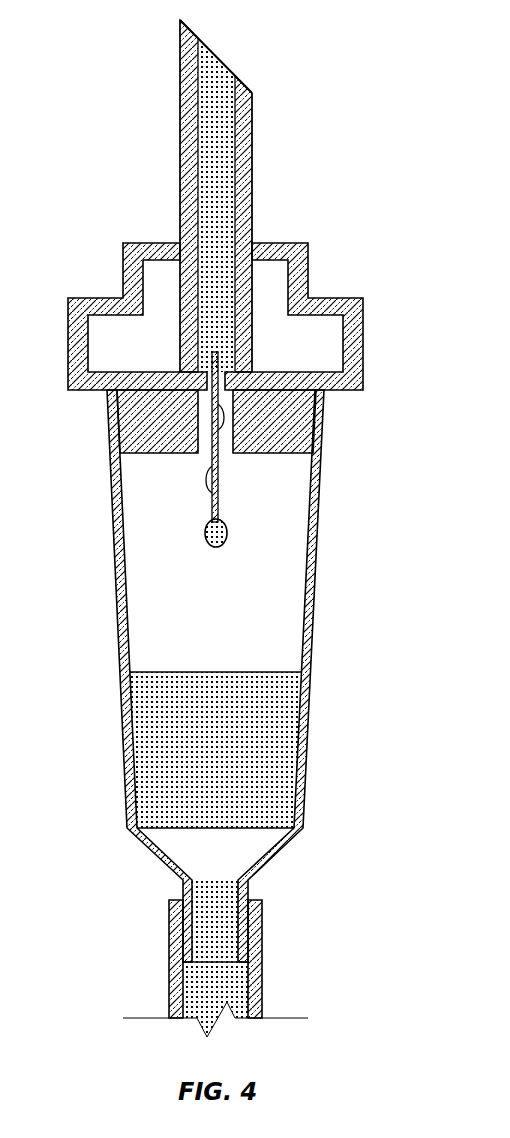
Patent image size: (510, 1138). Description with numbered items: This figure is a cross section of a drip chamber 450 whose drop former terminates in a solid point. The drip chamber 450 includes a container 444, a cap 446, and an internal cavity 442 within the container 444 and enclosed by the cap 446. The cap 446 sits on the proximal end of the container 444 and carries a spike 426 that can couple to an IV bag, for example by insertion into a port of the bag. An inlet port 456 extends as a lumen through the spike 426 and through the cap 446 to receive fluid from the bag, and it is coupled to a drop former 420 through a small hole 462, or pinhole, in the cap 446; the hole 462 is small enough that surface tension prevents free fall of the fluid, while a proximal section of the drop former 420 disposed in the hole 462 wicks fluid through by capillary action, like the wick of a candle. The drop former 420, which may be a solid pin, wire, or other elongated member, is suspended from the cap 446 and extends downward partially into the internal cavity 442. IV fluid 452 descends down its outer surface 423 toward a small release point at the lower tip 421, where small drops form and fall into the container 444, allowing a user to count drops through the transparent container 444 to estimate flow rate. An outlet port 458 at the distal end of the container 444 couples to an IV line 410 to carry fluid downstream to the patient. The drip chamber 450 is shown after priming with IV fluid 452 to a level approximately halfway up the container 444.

The IV line 410 is at (262, 975).
The drop former 420 is at (235, 508).
The lower tip 421 is at (205, 523).
The outer surface 423 is at (217, 472).
The spike 426 is at (253, 135).
The internal cavity 442 is at (252, 595).
The container 444 is at (310, 660).
The cap 446 is at (308, 268).
The drip chamber 450 is at (106, 150).
The IV fluid 452 is at (205, 539).
The inlet port 456 is at (220, 49).
The outlet port 458 is at (207, 971).
The small hole 462 is at (228, 378).